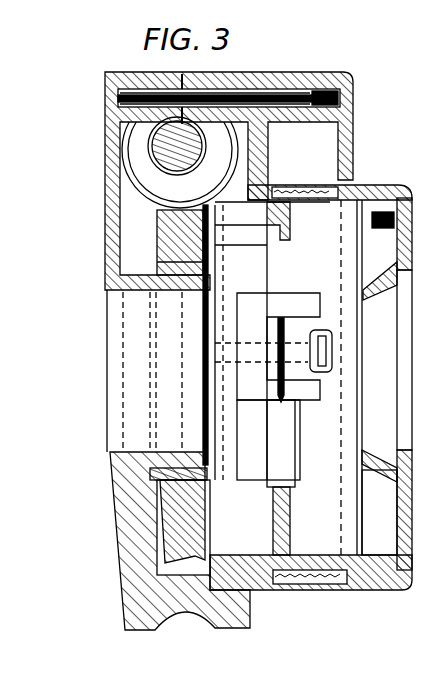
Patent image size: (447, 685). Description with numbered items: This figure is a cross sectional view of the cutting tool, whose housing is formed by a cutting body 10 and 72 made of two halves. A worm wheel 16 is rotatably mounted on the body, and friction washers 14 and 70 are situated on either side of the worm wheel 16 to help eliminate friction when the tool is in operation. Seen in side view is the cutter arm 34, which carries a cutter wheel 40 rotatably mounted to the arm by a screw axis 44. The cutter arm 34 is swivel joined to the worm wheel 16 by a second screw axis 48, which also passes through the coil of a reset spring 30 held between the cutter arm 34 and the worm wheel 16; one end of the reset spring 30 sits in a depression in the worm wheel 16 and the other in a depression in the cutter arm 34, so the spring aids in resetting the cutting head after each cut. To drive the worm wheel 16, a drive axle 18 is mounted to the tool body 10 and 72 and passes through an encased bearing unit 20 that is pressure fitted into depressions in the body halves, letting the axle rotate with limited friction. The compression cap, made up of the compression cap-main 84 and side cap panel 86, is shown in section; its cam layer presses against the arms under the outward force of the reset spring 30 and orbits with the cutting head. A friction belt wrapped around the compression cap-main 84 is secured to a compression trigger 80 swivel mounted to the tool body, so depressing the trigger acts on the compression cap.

The cutting body 10 is at (112, 525).
The friction washer 14 is at (155, 250).
The worm wheel 16 is at (212, 533).
The drive axle 18 is at (155, 138).
The encased bearing unit 20 is at (130, 149).
The reset spring 30 is at (214, 206).
The cutter arm 34 is at (304, 430).
The cutter wheel 40 is at (286, 298).
The screw axis 44 is at (336, 342).
The screw axis 48 is at (262, 252).
The friction washer 70 is at (212, 508).
The cutting body 72 is at (244, 74).
The compression trigger 80 is at (354, 96).
The compression cap-main 84 is at (390, 192).
The side cap panel 86 is at (396, 556).